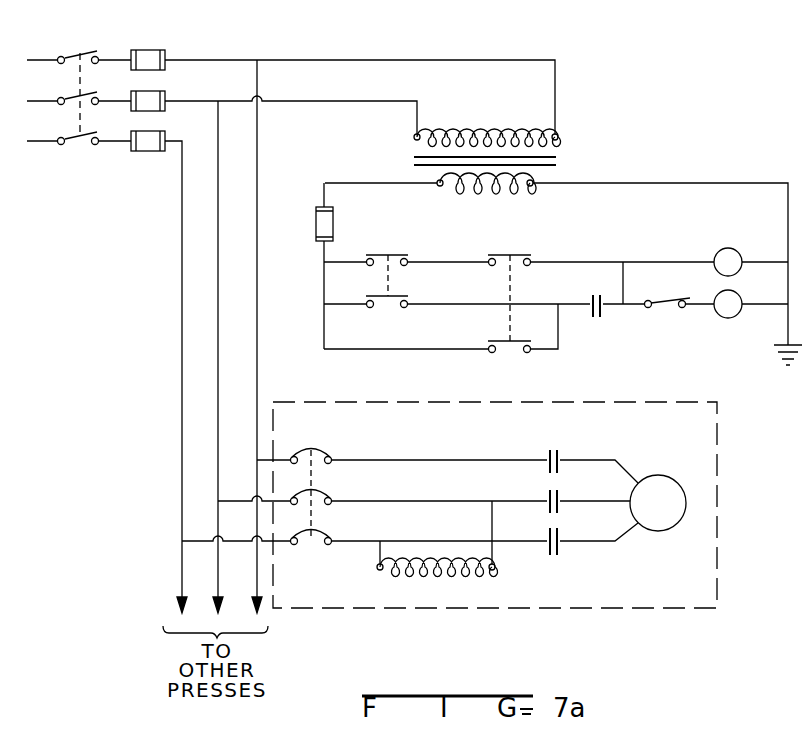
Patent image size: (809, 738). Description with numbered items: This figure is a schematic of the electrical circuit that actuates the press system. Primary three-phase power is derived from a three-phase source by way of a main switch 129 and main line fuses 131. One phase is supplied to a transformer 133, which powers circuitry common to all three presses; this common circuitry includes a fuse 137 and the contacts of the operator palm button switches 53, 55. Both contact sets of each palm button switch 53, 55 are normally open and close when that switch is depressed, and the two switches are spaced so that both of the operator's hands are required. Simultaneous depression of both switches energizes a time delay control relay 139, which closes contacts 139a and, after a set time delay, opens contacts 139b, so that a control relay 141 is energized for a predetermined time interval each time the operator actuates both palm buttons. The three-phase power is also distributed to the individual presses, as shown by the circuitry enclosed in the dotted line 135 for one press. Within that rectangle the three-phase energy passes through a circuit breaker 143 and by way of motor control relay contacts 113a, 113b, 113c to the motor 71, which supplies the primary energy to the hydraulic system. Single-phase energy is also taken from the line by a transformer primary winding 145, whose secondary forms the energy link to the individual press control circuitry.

The main switch 129 is at (72, 50).
The main line fuses 131 is at (150, 53).
The transformer 133 is at (560, 164).
The fuse 137 is at (333, 222).
The palm button switch 53 is at (389, 275).
The palm button switch 55 is at (511, 275).
The time delay control relay 139 is at (727, 248).
The control relay 141 is at (736, 293).
The contacts 139a is at (596, 319).
The contacts 139b is at (669, 311).
The circuit breaker 143 is at (312, 512).
The transformer primary winding 145 is at (476, 577).
The dotted line 135 is at (539, 610).
The motor control relay contacts 113a is at (553, 553).
The motor control relay contacts 113b is at (553, 493).
The motor control relay contacts 113c is at (553, 452).
The motor 71 is at (676, 468).